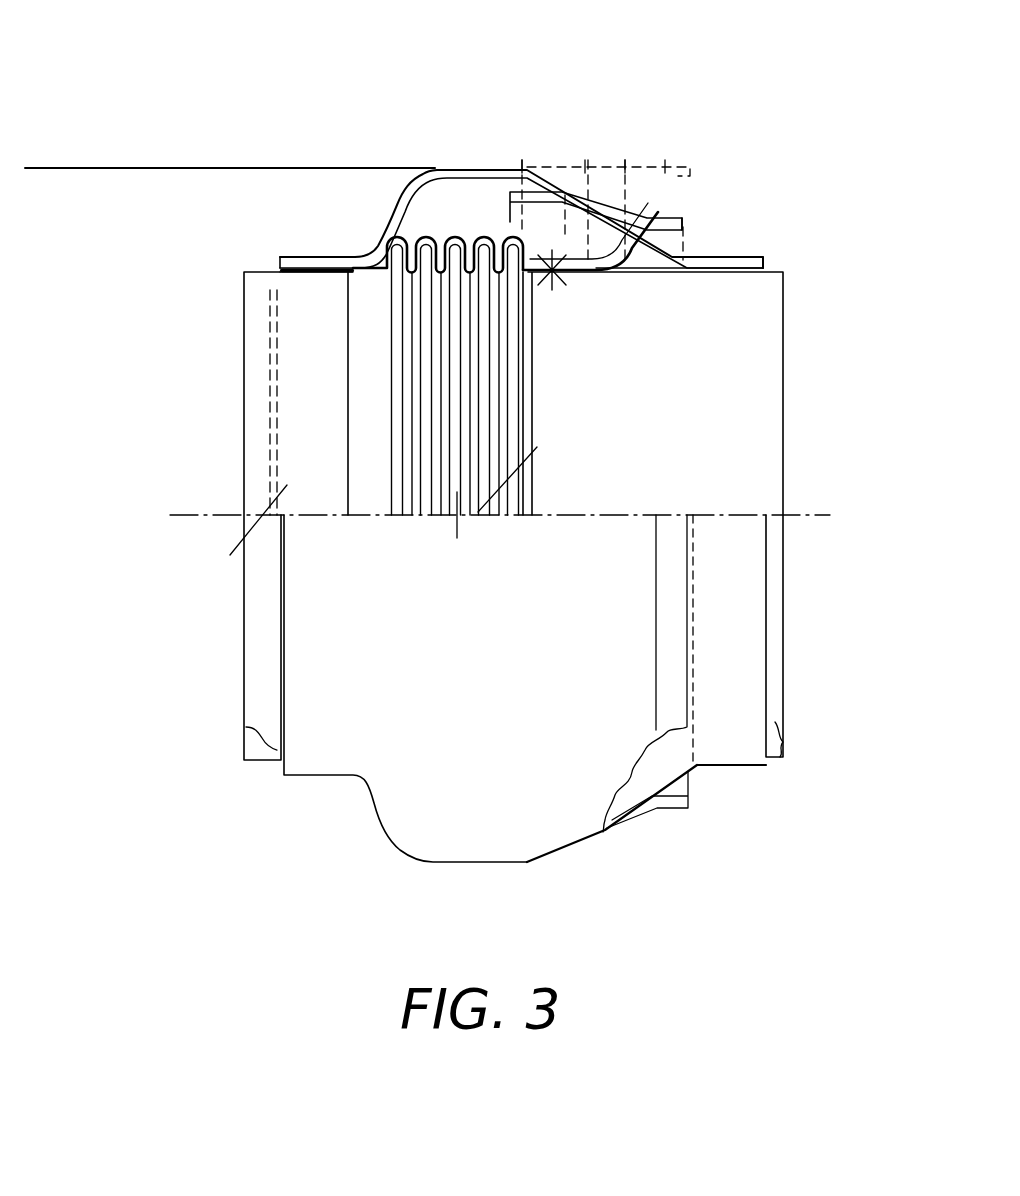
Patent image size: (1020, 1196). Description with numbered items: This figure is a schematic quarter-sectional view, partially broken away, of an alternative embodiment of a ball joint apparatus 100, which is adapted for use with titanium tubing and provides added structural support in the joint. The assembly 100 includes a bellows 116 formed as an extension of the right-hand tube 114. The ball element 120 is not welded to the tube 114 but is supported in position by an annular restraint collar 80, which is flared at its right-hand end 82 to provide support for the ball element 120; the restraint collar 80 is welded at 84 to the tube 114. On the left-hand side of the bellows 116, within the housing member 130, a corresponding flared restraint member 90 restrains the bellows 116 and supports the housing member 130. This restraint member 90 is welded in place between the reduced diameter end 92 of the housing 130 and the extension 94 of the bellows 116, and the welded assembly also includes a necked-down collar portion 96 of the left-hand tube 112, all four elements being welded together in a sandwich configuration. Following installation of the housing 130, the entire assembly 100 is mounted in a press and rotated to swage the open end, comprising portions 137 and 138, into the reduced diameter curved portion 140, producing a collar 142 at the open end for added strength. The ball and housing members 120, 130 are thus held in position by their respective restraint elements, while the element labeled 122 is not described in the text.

The ball joint apparatus 100 is at (476, 140).
The housing member 130 is at (458, 166).
The bellows 116 is at (447, 234).
The flared restraint member 90 is at (372, 250).
The reduced diameter end 92 is at (305, 256).
The extension of the bellows 94 is at (339, 275).
The necked-down collar portion 96 is at (303, 274).
The left-hand tube 112 is at (250, 267).
The right-hand tube 114 is at (787, 340).
The annular restraint collar 80 is at (600, 247).
The right-hand end 82 is at (625, 270).
The weld 84 is at (560, 287).
The ball element 120 is at (703, 251).
The foot end 122 is at (770, 257).
The open end portion 137 is at (602, 162).
The open end portion 138 is at (667, 162).
The reduced diameter curved portion 140 is at (639, 203).
The collar 142 is at (685, 222).